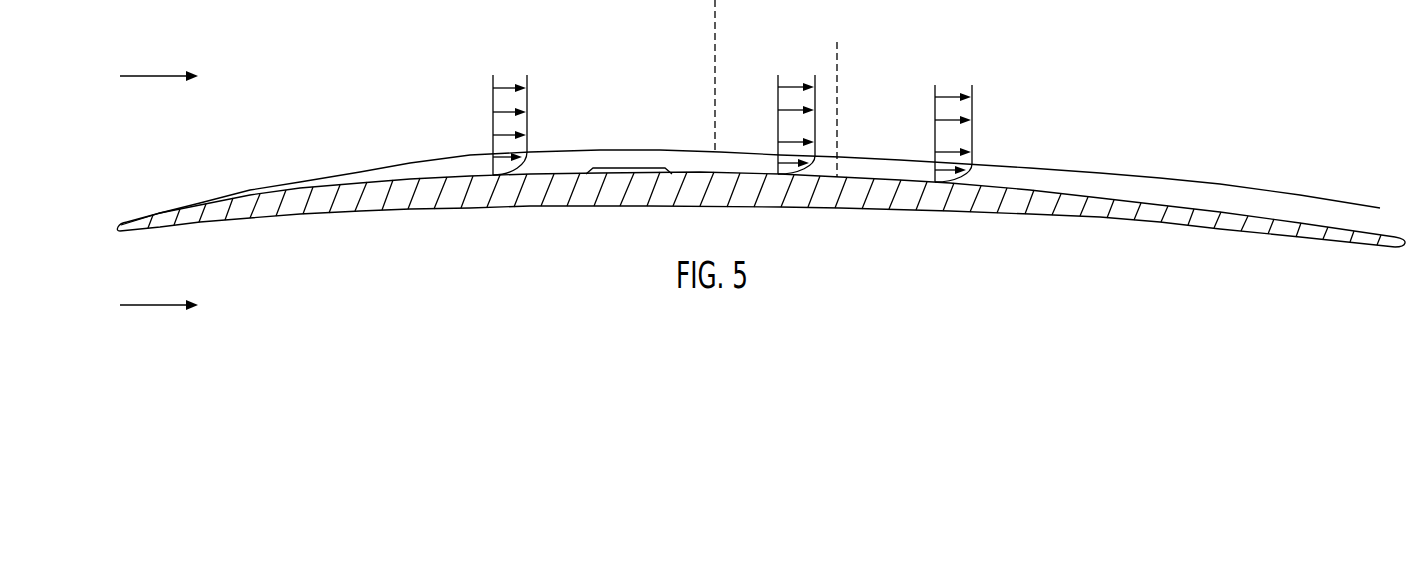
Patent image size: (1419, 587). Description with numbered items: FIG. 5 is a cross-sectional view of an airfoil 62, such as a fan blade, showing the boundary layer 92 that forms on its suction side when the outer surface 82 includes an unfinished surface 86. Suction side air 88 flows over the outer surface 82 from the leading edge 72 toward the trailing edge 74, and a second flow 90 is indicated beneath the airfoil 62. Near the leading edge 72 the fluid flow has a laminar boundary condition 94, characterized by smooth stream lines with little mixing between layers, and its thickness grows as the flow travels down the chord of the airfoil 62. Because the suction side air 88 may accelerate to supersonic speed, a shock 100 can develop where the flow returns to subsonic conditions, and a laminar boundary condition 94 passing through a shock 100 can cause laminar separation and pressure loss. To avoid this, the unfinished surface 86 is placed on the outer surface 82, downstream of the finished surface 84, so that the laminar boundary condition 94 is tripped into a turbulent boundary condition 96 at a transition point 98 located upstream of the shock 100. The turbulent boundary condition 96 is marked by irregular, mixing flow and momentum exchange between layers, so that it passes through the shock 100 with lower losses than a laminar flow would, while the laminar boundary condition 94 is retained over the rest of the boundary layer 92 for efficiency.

The airfoil 62 is at (378, 201).
The leading edge 72 is at (117, 232).
The trailing edge 74 is at (1402, 247).
The outer surface 82 is at (257, 217).
The finished surface 84 is at (467, 197).
The unfinished surface 86 is at (627, 178).
The suction side air 88 is at (148, 77).
The second flow direction 90 is at (148, 306).
The boundary layer 92 is at (638, 54).
The laminar boundary condition 94 is at (390, 171).
The turbulent boundary condition 96 is at (1077, 168).
The transition point 98 is at (717, 22).
The shock 100 is at (838, 70).